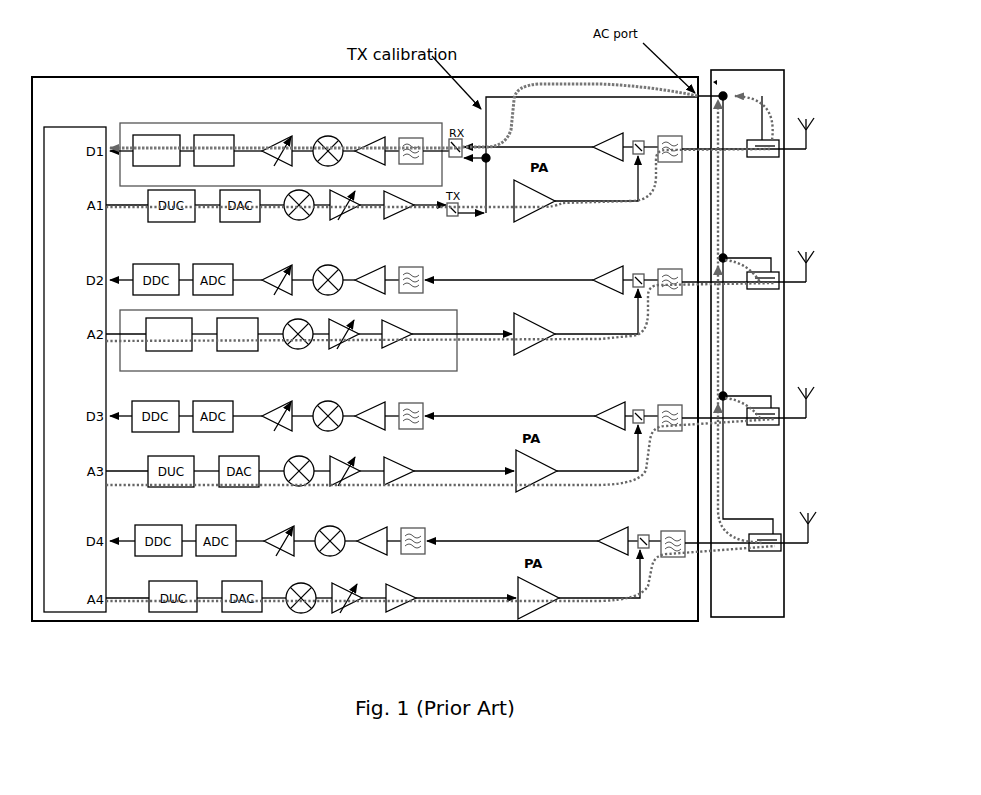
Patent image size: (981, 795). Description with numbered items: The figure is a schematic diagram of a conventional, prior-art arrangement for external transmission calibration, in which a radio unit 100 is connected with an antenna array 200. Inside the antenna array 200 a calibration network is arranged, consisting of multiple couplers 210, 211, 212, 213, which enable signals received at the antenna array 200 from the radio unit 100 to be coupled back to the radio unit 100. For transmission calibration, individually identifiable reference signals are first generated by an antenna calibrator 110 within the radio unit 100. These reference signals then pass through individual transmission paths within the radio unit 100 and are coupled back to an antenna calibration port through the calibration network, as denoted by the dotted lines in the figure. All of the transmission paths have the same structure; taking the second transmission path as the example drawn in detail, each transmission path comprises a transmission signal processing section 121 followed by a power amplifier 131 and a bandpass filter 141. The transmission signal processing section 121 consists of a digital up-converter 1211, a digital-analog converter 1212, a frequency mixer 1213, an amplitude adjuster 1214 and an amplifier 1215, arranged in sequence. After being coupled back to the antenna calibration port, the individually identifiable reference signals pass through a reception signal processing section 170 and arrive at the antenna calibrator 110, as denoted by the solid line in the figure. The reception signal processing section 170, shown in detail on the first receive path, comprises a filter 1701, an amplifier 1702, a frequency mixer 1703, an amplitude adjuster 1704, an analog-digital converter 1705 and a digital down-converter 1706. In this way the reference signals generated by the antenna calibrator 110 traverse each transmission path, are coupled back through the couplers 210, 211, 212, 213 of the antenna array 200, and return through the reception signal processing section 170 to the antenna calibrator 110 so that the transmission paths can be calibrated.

The radio unit 100 is at (365, 349).
The antenna calibrator 110 is at (75, 369).
The reception signal processing section 170 is at (339, 123).
The filter 1701 is at (411, 159).
The amplifier 1702 is at (372, 159).
The frequency mixer 1703 is at (328, 158).
The amplitude adjuster 1704 is at (277, 158).
The analog-digital converter (ADC) 1705 is at (214, 158).
The digital down-converter (DDC) 1706 is at (156, 158).
The transmission signal processing section 121 is at (462, 296).
The digital up-converter (DUC) 1211 is at (169, 342).
The digital-analog converter (DAC) 1212 is at (237, 342).
The frequency mixer 1213 is at (297, 342).
The amplitude adjuster 1214 is at (342, 342).
The amplifier 1215 is at (397, 343).
The power amplifier (PA) 131 is at (536, 320).
The bandpass filter 141 is at (669, 288).
The antenna array 200 is at (764, 312).
The coupler 210 is at (763, 156).
The coupler 211 is at (763, 290).
The coupler 212 is at (763, 425).
The coupler 213 is at (765, 551).